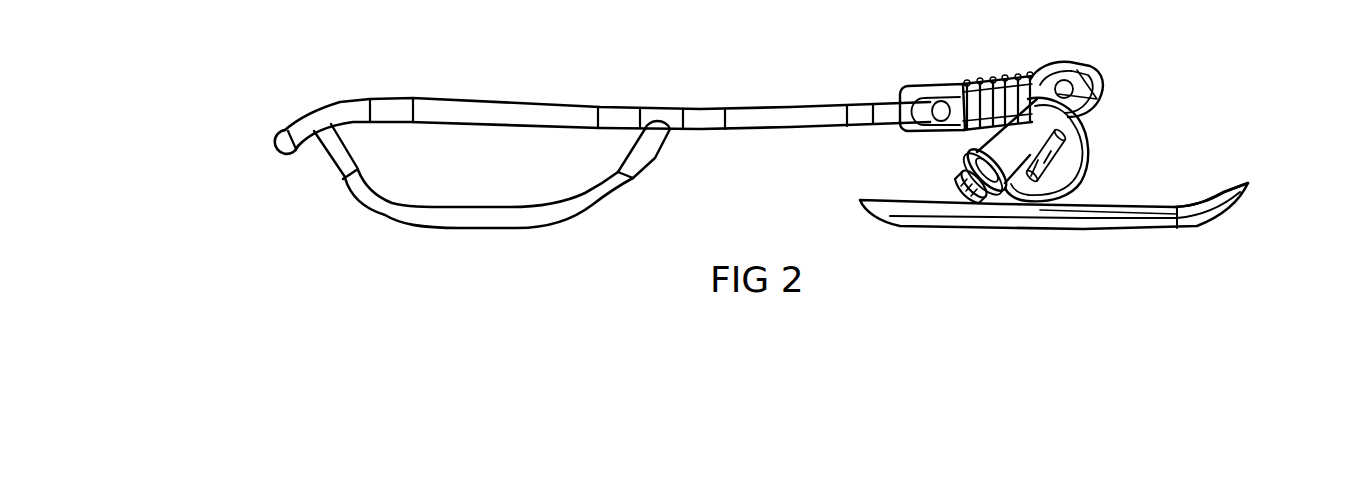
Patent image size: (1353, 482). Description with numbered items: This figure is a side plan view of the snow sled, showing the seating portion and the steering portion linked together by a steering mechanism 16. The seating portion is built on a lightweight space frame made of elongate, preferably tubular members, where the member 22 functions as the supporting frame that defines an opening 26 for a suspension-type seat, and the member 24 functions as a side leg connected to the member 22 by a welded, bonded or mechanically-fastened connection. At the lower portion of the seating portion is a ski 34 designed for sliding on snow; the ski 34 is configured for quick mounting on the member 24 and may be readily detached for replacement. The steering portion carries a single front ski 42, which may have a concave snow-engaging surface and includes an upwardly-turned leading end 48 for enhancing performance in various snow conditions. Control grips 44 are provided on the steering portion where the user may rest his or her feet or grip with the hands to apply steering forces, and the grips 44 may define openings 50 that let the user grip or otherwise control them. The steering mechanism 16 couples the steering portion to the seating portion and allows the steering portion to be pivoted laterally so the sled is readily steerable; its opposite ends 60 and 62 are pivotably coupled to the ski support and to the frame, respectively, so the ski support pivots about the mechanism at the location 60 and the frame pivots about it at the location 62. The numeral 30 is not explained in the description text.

The steering mechanism 16 is at (984, 75).
The member 22 is at (512, 107).
The member 24 is at (655, 160).
The opening 26 is at (774, 9).
The frame member 30 is at (609, 8).
The ski 34 is at (463, 217).
The ski 42 is at (1084, 220).
The control grip 44 is at (1000, 141).
The leading end 48 is at (1218, 197).
The opening 50 is at (1063, 163).
The end 60 is at (1072, 68).
The end 62 is at (922, 86).